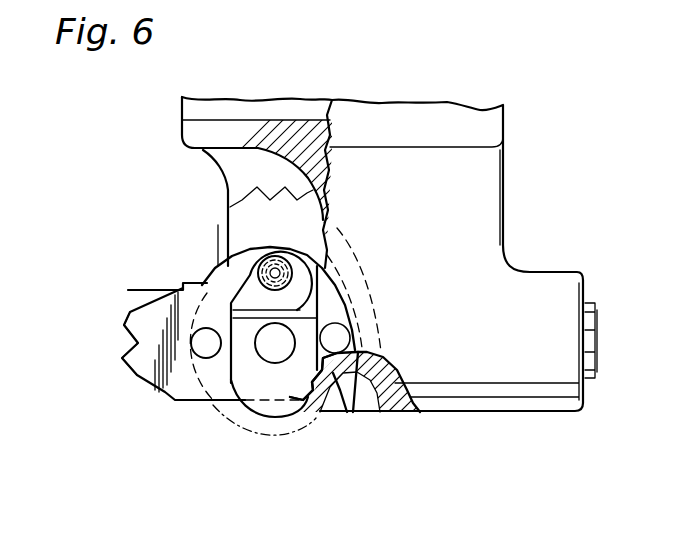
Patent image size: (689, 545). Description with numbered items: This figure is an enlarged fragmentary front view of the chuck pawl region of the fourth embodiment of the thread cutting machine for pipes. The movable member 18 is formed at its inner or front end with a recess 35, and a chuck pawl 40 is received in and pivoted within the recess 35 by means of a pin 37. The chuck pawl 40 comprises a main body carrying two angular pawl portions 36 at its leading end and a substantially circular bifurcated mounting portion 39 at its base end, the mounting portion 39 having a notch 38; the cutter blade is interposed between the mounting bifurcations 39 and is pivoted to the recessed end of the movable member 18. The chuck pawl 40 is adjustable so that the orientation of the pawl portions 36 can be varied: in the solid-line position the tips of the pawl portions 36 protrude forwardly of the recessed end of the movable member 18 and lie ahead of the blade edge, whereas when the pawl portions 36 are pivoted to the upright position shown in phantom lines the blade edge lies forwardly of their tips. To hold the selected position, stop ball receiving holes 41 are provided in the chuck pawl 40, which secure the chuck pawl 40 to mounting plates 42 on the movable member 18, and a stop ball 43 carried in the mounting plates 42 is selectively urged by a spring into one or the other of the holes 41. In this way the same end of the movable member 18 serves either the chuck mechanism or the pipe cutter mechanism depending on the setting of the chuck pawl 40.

The movable member 18 is at (523, 393).
The recess 35 is at (268, 156).
The pawl portions 36 is at (123, 358).
The pin 37 is at (270, 356).
The notch 38 is at (205, 400).
The bifurcated mounting portion 39 is at (334, 410).
The chuck pawl 40 is at (133, 384).
The stop ball receiving holes 41 is at (198, 330).
The mounting plates 42 is at (282, 392).
The stop ball 43 is at (273, 271).